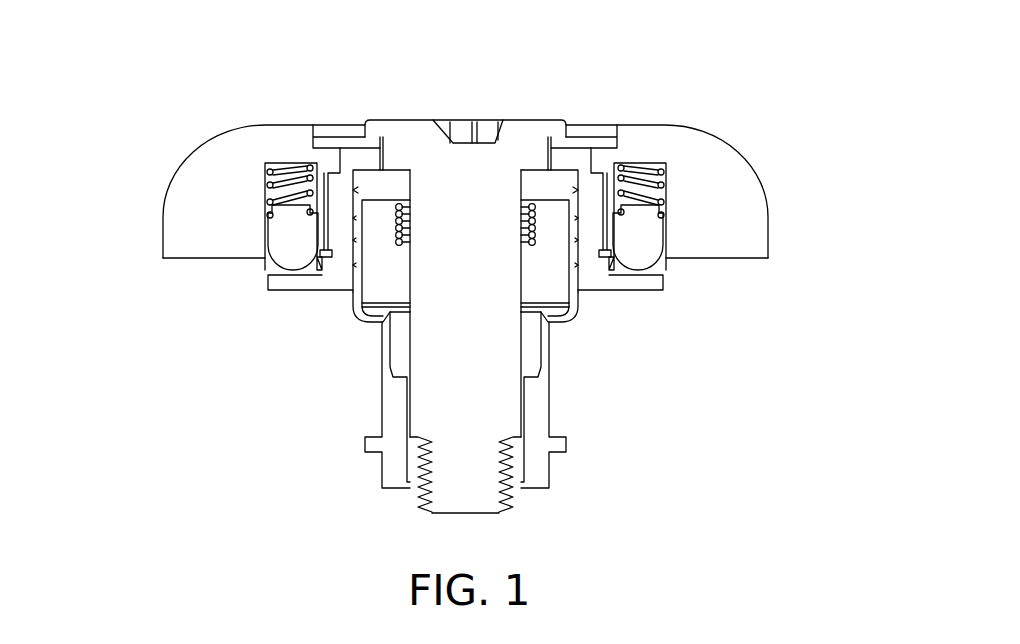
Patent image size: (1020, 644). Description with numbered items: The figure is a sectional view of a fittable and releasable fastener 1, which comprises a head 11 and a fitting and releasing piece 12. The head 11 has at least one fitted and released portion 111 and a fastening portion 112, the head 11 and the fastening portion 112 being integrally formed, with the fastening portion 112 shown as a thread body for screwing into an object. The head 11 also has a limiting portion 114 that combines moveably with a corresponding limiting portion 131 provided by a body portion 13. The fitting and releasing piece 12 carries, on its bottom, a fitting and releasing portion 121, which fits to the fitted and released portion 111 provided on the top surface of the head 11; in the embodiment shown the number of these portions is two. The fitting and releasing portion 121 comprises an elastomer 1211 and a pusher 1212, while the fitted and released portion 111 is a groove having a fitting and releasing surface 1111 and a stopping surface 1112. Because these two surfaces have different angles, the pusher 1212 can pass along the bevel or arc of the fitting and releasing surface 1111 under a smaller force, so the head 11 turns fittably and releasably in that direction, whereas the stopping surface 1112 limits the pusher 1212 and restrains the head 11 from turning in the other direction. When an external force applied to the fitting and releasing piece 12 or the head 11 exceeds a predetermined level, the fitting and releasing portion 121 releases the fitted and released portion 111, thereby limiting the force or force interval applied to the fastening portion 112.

The fittable and releasable fastener 1 is at (435, 269).
The head 11 is at (533, 125).
The fitting and releasing piece 12 is at (205, 165).
The body portion 13 is at (552, 403).
The fitted and released portion 111 is at (314, 275).
The fastening portion 112 is at (427, 460).
The limiting portion 114 is at (357, 312).
The fitting and releasing portion 121 is at (263, 265).
The corresponding limiting portion 131 is at (387, 317).
The fitting and releasing surface 1111 is at (317, 268).
The stopping surface 1112 is at (618, 272).
The elastomer 1211 is at (278, 165).
The pusher 1212 is at (277, 240).